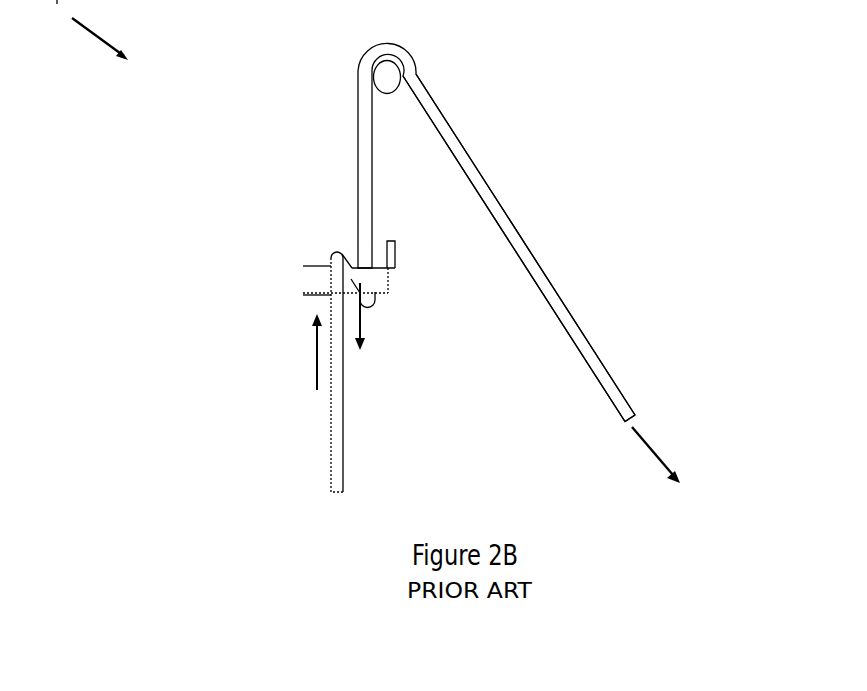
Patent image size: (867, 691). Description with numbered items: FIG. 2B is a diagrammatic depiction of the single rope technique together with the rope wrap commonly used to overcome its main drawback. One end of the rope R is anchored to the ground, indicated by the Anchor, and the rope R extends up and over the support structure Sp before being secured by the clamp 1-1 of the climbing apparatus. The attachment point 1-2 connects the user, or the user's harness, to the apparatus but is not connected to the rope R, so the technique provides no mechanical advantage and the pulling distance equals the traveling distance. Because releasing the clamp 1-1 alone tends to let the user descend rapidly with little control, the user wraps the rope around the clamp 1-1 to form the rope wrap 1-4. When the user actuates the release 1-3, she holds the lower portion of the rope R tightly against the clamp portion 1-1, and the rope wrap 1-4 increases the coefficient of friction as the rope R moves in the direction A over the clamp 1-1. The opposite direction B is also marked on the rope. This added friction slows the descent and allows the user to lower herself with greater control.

The clamp 1-1 is at (367, 277).
The attachment point 1-2 is at (396, 251).
The release 1-3 is at (296, 267).
The rope wrap 1-4 is at (337, 258).
The support structure Sp is at (385, 71).
The rope R is at (472, 163).
The direction of rope movement A is at (294, 352).
The downward direction B is at (368, 333).
The anchor direction Anchor is at (684, 469).